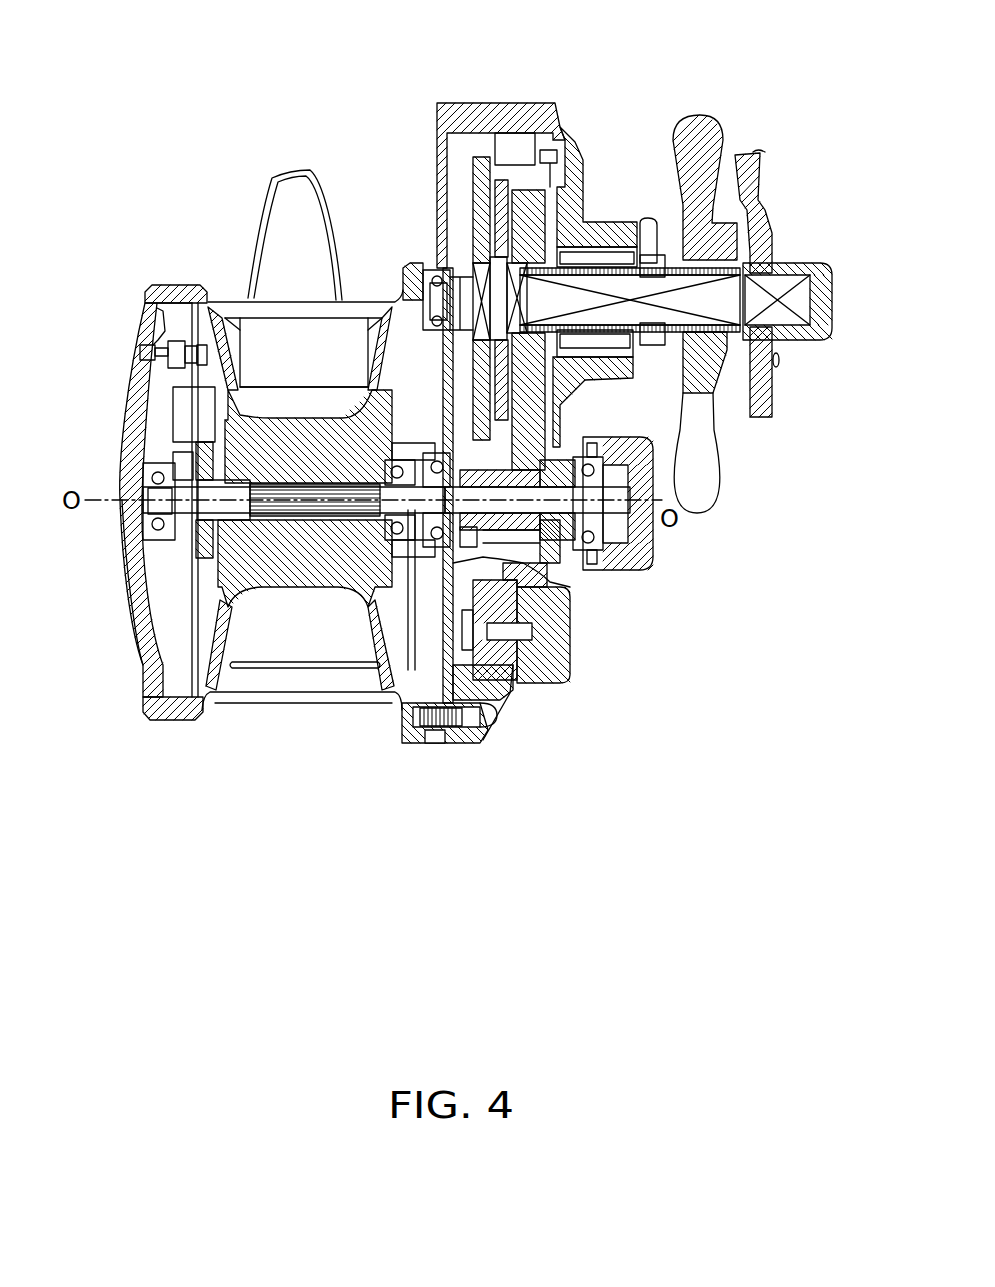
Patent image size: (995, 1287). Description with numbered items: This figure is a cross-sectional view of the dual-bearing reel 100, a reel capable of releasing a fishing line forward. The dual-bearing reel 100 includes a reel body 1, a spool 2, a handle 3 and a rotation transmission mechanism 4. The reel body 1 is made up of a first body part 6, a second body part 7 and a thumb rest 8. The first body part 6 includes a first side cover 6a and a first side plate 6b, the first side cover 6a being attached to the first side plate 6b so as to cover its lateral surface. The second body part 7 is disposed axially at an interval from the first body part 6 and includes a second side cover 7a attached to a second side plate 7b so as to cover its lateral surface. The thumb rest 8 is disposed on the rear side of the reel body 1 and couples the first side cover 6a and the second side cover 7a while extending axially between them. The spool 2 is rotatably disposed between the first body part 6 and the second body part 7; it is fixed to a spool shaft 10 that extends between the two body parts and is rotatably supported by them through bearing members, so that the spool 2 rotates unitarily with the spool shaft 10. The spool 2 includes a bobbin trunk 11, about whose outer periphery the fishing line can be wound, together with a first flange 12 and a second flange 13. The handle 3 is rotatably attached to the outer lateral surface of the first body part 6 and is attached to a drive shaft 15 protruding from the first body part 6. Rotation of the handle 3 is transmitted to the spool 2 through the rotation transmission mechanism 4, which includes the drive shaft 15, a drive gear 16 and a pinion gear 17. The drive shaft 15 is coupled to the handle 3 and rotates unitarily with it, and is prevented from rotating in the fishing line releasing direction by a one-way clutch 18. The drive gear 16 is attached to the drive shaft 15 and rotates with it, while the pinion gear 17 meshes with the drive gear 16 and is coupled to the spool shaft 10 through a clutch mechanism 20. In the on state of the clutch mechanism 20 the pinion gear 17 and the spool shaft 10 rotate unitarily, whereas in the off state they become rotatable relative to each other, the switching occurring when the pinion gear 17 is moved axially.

The dual-bearing reel 100 is at (150, 205).
The reel body 1 is at (528, 730).
The spool 2 is at (305, 590).
The handle 3 is at (765, 195).
The rotation transmission mechanism 4 is at (481, 150).
The first body part 6 is at (443, 748).
The first side cover 6a is at (462, 745).
The first side plate 6b is at (415, 745).
The second body part 7 is at (172, 725).
The second side cover 7a is at (143, 680).
The second side plate 7b is at (188, 705).
The thumb rest 8 is at (303, 318).
The spool shaft 10 is at (240, 513).
The bobbin trunk 11 is at (305, 410).
The first flange 12 is at (376, 328).
The second flange 13 is at (236, 328).
The drive shaft 15 is at (640, 293).
The drive gear 16 is at (520, 135).
The pinion gear 17 is at (568, 577).
The one-way clutch 18 is at (590, 262).
The clutch mechanism 20 is at (415, 537).